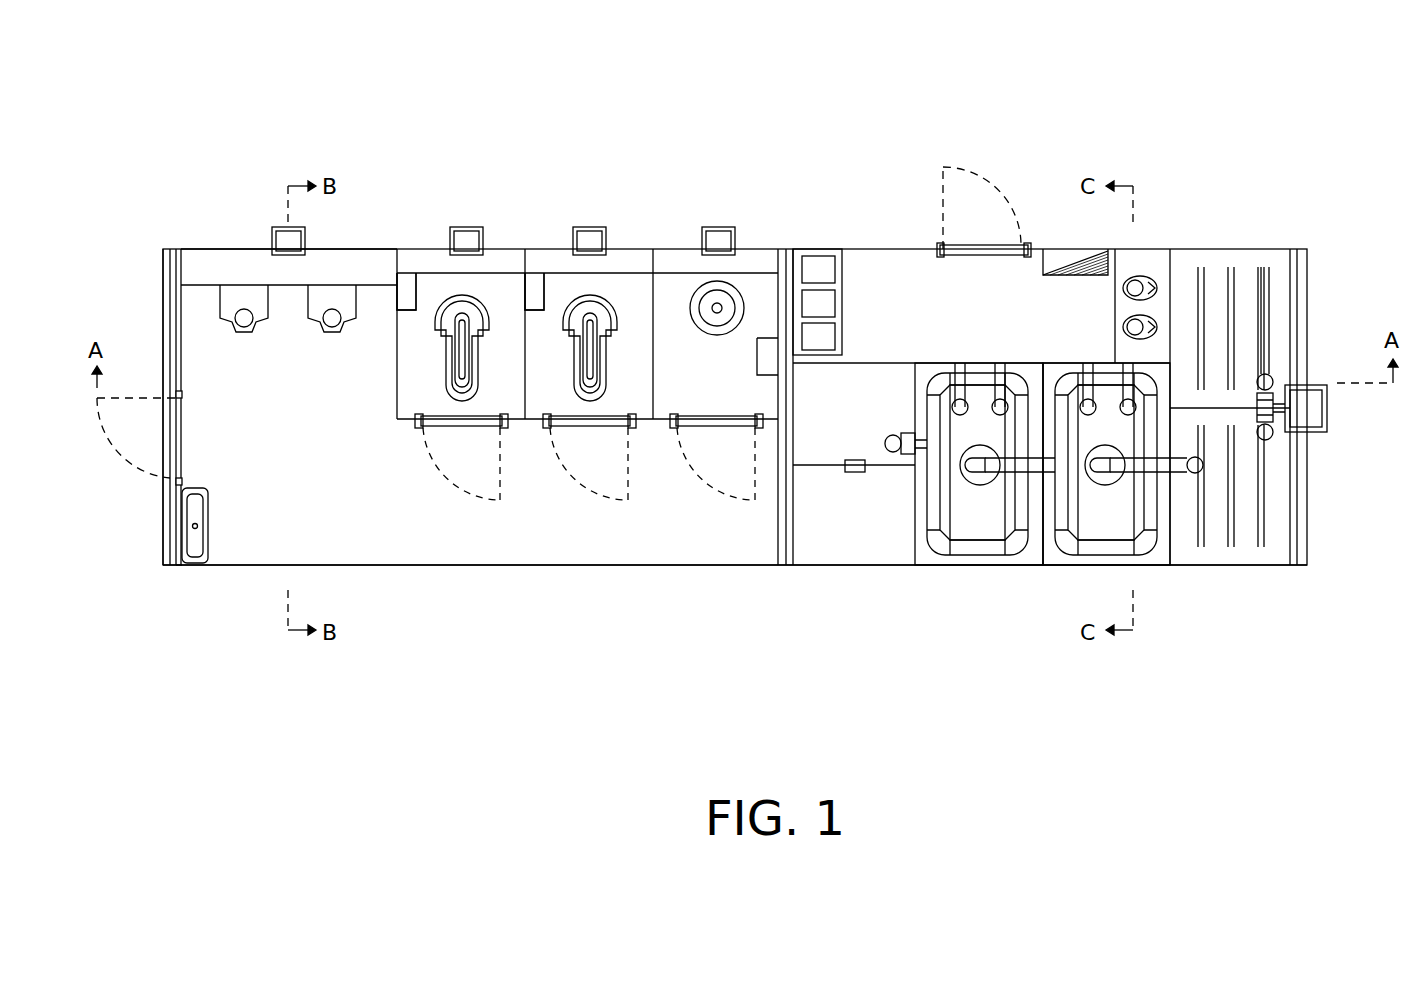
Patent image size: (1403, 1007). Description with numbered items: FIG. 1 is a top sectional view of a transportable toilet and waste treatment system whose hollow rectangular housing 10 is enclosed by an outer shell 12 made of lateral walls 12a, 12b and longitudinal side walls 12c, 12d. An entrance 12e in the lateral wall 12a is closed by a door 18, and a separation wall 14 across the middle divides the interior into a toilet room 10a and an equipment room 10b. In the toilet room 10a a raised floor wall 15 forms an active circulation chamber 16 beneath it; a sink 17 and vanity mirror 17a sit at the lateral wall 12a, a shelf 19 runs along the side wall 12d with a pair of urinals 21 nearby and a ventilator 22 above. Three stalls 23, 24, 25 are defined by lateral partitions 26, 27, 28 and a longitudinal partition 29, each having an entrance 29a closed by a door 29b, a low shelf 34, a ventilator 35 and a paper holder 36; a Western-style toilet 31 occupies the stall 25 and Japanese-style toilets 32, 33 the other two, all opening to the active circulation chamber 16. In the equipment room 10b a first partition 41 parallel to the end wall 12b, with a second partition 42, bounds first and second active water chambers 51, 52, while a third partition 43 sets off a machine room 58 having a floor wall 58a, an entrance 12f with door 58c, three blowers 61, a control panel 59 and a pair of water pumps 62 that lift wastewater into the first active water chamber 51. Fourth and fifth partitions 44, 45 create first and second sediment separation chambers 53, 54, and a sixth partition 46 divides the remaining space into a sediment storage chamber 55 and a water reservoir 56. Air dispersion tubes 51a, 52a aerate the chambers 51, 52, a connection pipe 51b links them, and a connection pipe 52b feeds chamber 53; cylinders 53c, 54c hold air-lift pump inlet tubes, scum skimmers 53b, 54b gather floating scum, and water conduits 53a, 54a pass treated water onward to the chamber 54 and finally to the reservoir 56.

The housing 10 is at (1258, 232).
The toilet room 10a is at (616, 544).
The equipment room 10b is at (905, 276).
The outer shell 12 is at (170, 249).
The lateral wall 12a is at (163, 262).
The end wall 12b is at (1300, 262).
The side wall 12c is at (700, 565).
The side wall 12d is at (222, 249).
The entrance 12e is at (181, 405).
The entrance 12f is at (943, 249).
The separation wall 14 is at (810, 565).
The floor wall 15 is at (430, 565).
The active circulation chamber 16 is at (525, 565).
The sink 17 is at (200, 512).
The vanity mirror 17a is at (176, 566).
The door 18 is at (178, 470).
The shelf 19 is at (365, 262).
The urinals 21 is at (237, 330).
The ventilator 22 is at (305, 236).
The stall 23 is at (497, 282).
The stall 24 is at (632, 282).
The stall 25 is at (757, 262).
The lateral partition 26 is at (397, 370).
The lateral partition 27 is at (524, 358).
The lateral partition 28 is at (653, 358).
The longitudinal partition 29 is at (415, 427).
The entrances 29a is at (425, 428).
The doors 29b is at (447, 428).
The Western-style toilet 31 is at (719, 305).
The Japanese-style toilet 32 is at (580, 372).
The Japanese-style toilet 33 is at (452, 375).
The shelf 34 is at (423, 262).
The ventilator 35 is at (470, 227).
The paper holder 36 is at (408, 310).
The first partition 41 is at (1170, 300).
The second partition 42 is at (1268, 378).
The third partition 43 is at (1043, 363).
The fourth partition 44 is at (1047, 565).
The fifth partition 45 is at (925, 565).
The sixth partition 46 is at (817, 460).
The first active water chamber 51 is at (1220, 262).
The air dispersion tubes 51a is at (1265, 272).
The connection pipe 51b is at (1285, 392).
The second active water chamber 52 is at (1280, 495).
The air dispersion tubes 52a is at (1285, 565).
The connection pipe 52b is at (1192, 478).
The first sediment separation chamber 53 is at (1135, 560).
The water conduit 53a is at (1150, 565).
The scum skimmer 53b is at (1126, 398).
The cylinder 53c is at (990, 480).
The second sediment separation chamber 54 is at (1000, 555).
The water conduit 54a is at (960, 560).
The scum skimmer 54b is at (998, 400).
The cylinder 54c is at (915, 440).
The sediment storage chamber 55 is at (855, 565).
The water reservoir 56 is at (893, 372).
The machine room 58 is at (910, 258).
The floor wall 58a is at (862, 258).
The door 58c is at (985, 245).
The control panel 59 is at (1043, 262).
The blowers 61 is at (836, 268).
The water pumps 62 is at (1148, 318).